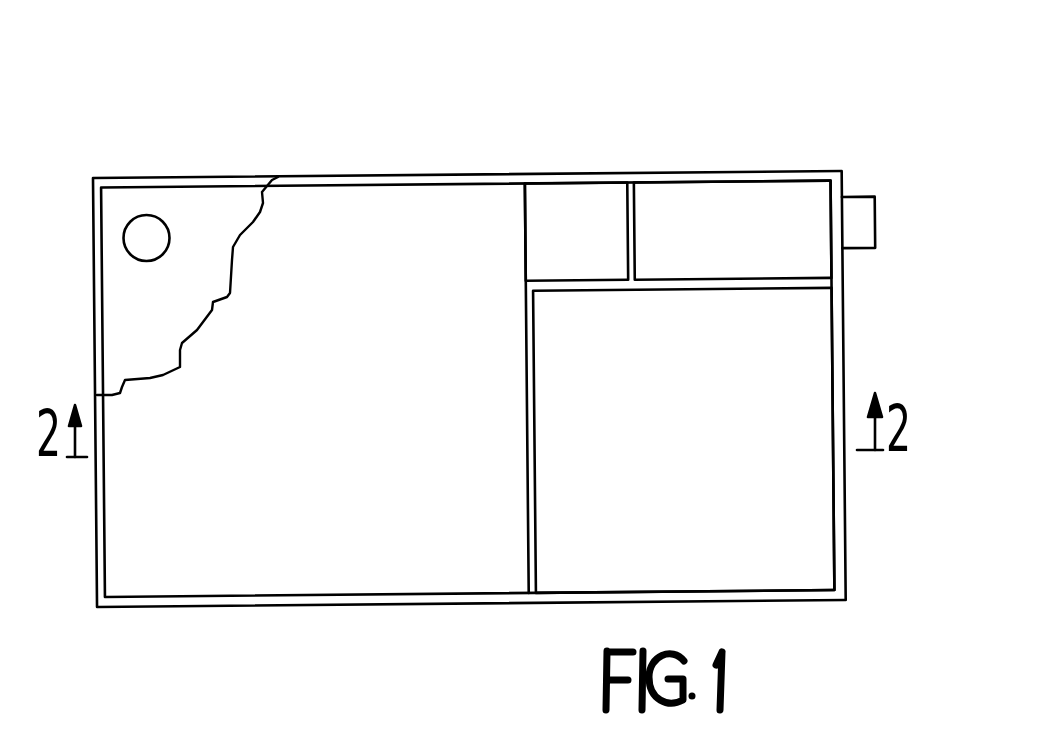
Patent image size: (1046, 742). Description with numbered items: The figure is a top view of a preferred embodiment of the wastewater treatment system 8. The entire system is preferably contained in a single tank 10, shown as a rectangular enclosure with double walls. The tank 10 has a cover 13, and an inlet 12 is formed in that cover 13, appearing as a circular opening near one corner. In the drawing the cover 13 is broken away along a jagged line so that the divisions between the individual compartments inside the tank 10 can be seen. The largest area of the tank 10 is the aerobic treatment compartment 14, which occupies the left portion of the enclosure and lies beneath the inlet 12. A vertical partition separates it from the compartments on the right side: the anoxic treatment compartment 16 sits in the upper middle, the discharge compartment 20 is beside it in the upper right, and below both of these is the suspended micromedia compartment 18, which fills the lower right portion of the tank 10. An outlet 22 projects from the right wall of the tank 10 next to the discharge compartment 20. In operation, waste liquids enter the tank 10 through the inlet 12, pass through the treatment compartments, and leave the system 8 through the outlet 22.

The wastewater treatment system 8 is at (647, 79).
The tank 10 is at (668, 175).
The inlet 12 is at (144, 232).
The cover 13 is at (232, 202).
The aerobic treatment compartment 14 is at (338, 380).
The anoxic treatment compartment 16 is at (580, 245).
The suspended micromedia compartment 18 is at (696, 440).
The discharge compartment 20 is at (742, 248).
The outlet 22 is at (860, 224).